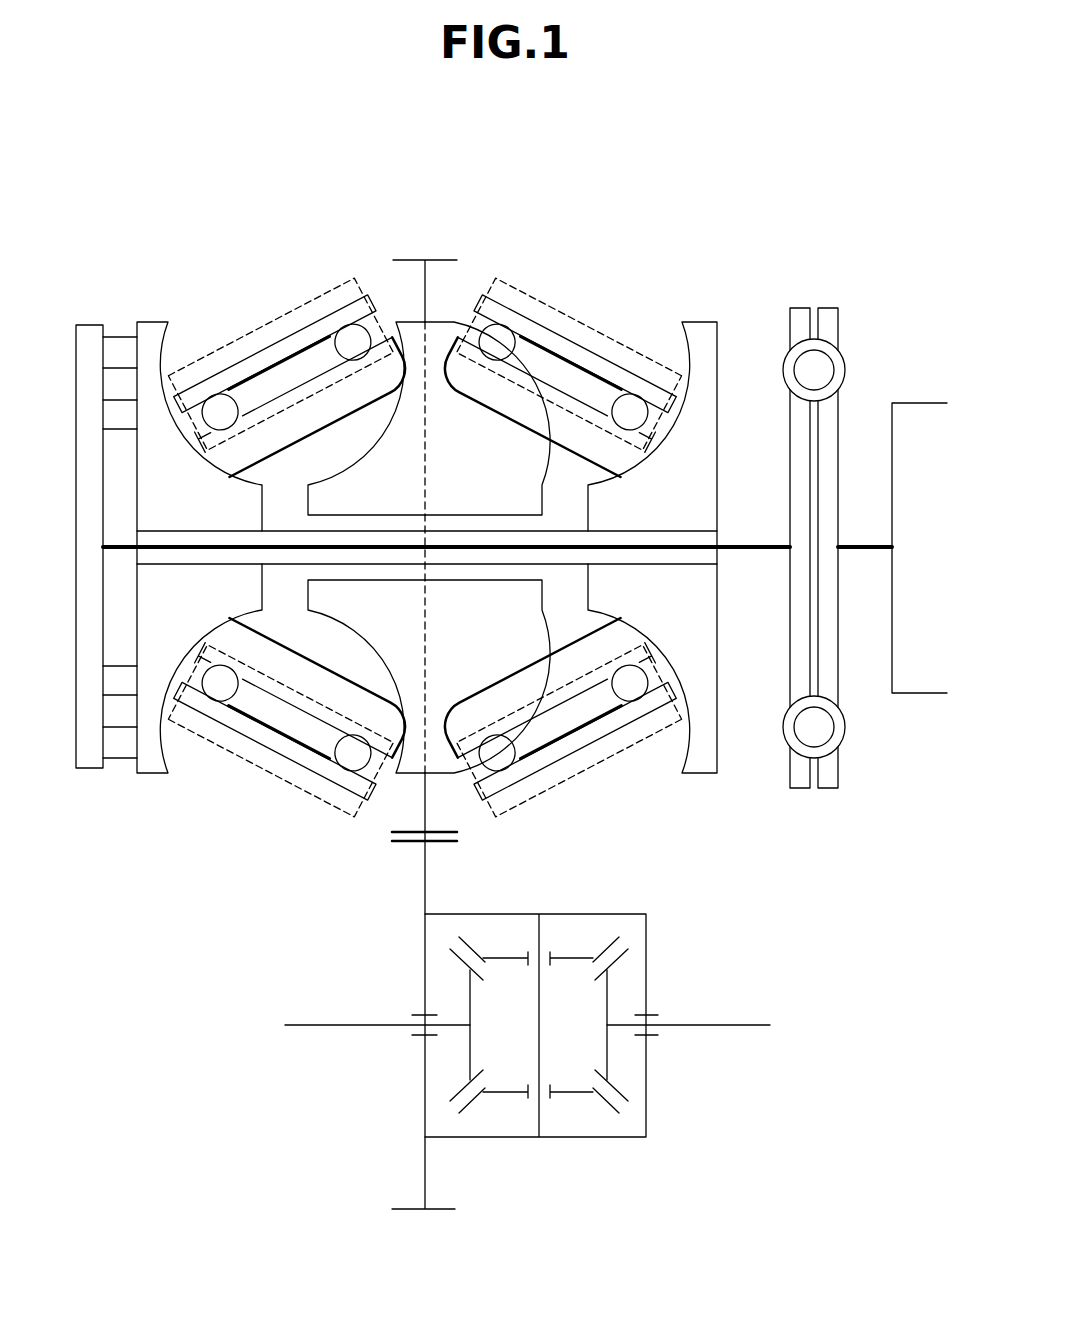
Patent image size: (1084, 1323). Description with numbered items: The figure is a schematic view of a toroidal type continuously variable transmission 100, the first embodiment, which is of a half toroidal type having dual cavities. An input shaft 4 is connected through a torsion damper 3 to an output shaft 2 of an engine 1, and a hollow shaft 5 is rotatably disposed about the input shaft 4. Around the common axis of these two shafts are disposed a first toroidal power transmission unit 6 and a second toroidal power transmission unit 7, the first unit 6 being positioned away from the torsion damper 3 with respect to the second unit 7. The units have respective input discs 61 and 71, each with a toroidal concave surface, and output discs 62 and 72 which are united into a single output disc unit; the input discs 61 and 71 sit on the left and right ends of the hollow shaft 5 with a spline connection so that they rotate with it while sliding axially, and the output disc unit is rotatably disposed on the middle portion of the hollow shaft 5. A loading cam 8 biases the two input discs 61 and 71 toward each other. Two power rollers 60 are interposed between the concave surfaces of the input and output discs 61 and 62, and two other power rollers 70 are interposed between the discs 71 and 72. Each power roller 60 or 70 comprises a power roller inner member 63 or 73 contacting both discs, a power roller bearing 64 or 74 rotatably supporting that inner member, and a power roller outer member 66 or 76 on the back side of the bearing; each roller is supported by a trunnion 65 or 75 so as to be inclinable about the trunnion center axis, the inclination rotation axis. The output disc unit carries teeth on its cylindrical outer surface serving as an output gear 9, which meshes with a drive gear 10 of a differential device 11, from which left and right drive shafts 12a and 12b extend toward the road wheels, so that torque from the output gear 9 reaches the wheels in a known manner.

The toroidal type continuously variable transmission 100 is at (890, 133).
The engine 1 is at (910, 403).
The output shaft 2 is at (860, 546).
The torsion damper 3 is at (814, 308).
The input shaft 4 is at (750, 546).
The hollow shaft 5 is at (388, 531).
The first toroidal power transmission unit 6 is at (265, 323).
The second toroidal power transmission unit 7 is at (598, 313).
The loading cam 8 is at (115, 310).
The output gear 9 is at (442, 832).
The drive gear 10 is at (440, 842).
The differential device 11 is at (606, 899).
The left drive shaft 12a is at (353, 1025).
The right drive shaft 12b is at (720, 1025).
The power roller 60 is at (250, 754).
The input disc 61 is at (157, 332).
The output disc 62 is at (406, 322).
The power roller inner member 63 is at (287, 393).
The power roller bearing 64 is at (221, 408).
The trunnion 65 is at (322, 293).
The power roller outer member 66 is at (240, 368).
The power roller 70 is at (598, 760).
The input disc 71 is at (703, 332).
The output disc 72 is at (446, 322).
The power roller inner member 73 is at (553, 342).
The power roller bearing 74 is at (638, 410).
The trunnion 75 is at (550, 303).
The power roller outer member 76 is at (546, 388).